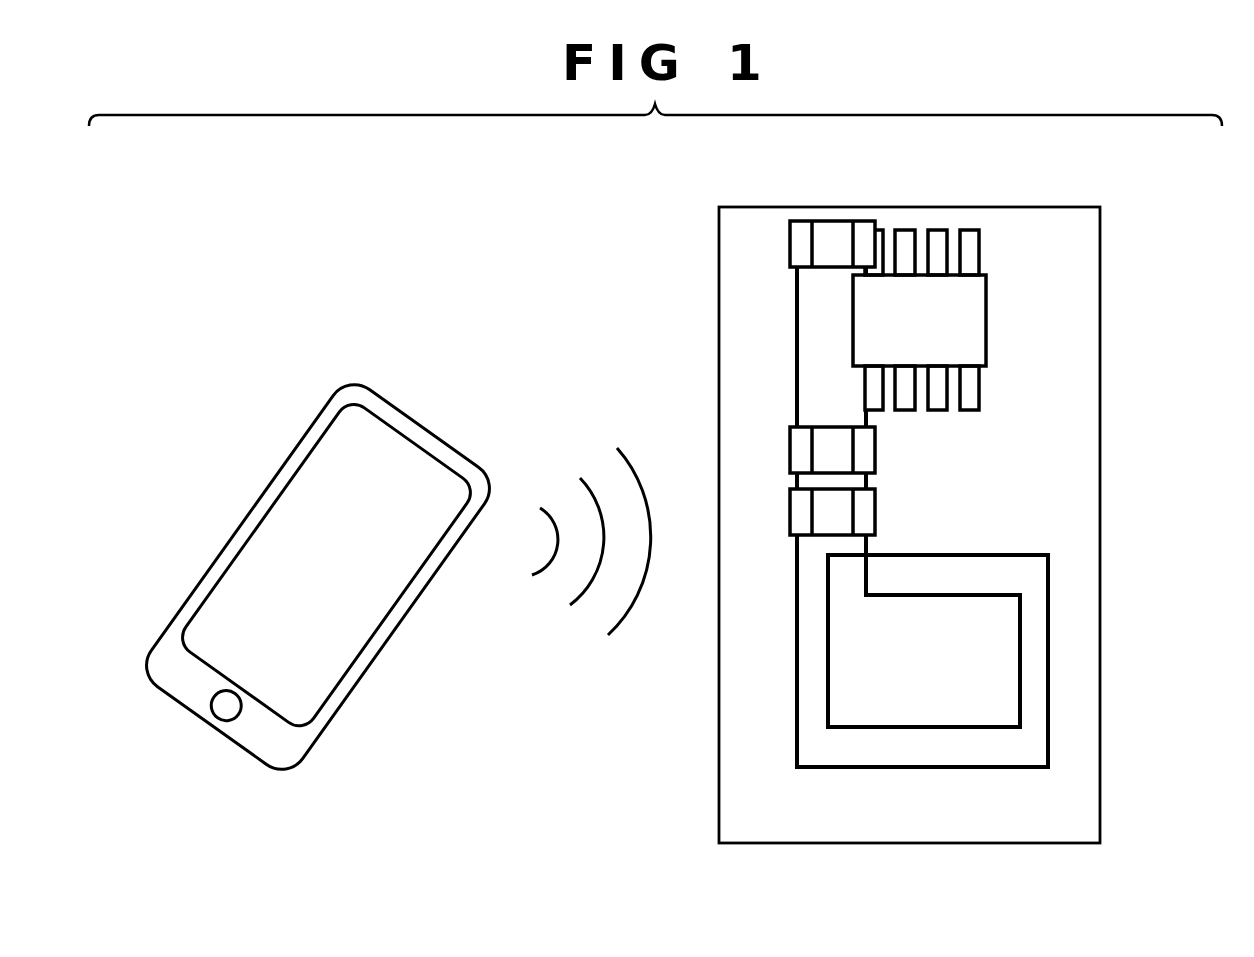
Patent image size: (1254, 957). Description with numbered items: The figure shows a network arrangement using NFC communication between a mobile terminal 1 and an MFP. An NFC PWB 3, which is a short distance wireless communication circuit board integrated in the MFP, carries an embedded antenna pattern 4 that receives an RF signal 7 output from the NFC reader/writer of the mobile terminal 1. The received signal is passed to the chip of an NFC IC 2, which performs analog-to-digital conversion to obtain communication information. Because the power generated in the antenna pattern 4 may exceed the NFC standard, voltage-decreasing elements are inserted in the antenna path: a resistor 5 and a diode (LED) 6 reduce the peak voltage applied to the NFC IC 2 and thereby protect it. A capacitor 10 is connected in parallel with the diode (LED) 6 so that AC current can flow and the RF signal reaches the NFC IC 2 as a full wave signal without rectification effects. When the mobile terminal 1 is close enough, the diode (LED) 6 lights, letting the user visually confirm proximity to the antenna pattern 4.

The mobile terminal 1 is at (300, 441).
The NFC IC 2 is at (985, 320).
The NFC PWB 3 is at (1080, 415).
The antenna pattern 4 is at (1020, 650).
The resistor 5 is at (864, 220).
The diode (LED) 6 is at (790, 447).
The RF signal 7 is at (595, 465).
The capacitor 10 is at (790, 509).